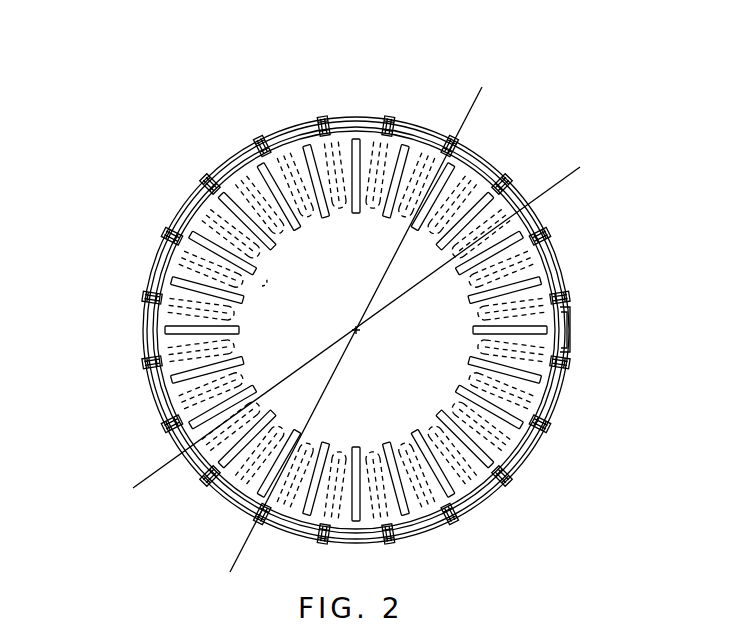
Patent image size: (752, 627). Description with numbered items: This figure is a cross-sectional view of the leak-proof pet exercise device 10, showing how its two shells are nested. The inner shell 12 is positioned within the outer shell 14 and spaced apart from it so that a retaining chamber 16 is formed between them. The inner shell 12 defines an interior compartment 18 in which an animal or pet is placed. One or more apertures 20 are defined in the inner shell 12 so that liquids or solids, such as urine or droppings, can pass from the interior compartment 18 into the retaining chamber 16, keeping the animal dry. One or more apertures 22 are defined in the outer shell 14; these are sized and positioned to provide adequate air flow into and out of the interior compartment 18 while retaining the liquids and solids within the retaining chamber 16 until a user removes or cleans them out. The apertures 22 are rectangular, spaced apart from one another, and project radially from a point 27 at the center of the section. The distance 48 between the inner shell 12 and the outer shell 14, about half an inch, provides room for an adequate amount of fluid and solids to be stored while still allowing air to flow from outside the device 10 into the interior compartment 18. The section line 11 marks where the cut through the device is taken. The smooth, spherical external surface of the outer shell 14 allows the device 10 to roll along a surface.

The leak-proof pet exercise device 10 is at (103, 173).
The section line 11- 11 is at (580, 167).
The inner shell 12 is at (229, 160).
The outer shell 14 is at (301, 115).
The retaining chamber 16 is at (347, 125).
The interior compartment 18 is at (411, 415).
The apertures 20 is at (283, 233).
The apertures 22 is at (279, 293).
The point 27 is at (381, 342).
The distance 48 is at (559, 283).